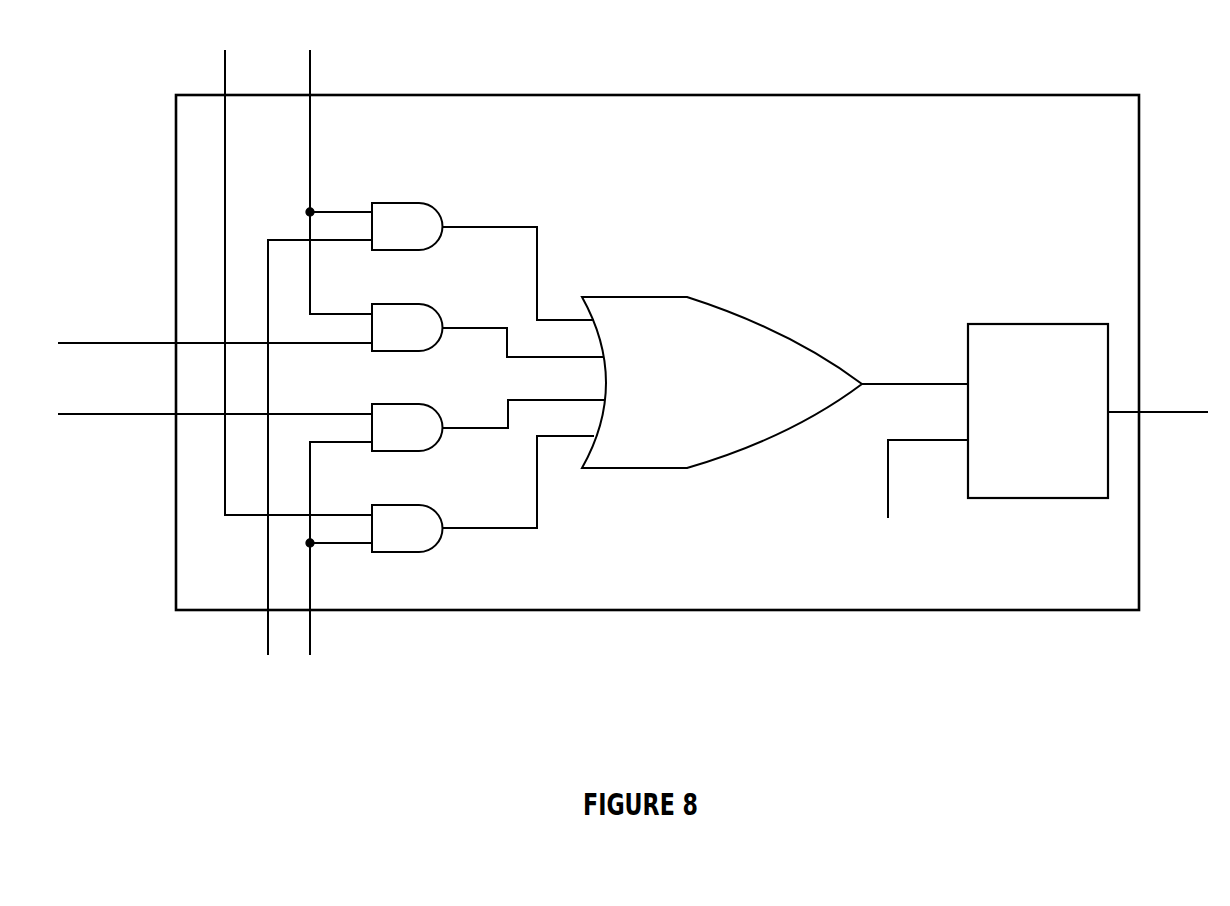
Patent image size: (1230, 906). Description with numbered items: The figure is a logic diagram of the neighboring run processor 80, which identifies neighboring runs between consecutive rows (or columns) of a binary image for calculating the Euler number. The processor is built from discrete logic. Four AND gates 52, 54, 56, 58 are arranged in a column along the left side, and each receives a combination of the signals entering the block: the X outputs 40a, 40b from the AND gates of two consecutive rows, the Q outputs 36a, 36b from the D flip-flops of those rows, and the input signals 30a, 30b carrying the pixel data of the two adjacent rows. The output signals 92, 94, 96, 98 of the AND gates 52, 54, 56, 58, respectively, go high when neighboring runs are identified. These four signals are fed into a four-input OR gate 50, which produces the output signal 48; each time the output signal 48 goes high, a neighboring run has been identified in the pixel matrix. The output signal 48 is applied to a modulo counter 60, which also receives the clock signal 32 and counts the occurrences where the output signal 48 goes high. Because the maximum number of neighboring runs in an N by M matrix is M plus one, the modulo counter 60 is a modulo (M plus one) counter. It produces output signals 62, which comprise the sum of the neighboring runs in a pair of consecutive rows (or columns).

The neighboring run processor 80 is at (894, 264).
The Q output 36a is at (228, 75).
The Q output 36b is at (268, 628).
The X output 40a is at (312, 75).
The X output 40b is at (312, 628).
The input signal 30a is at (70, 414).
The input signal 30b is at (70, 343).
The AND gate 52 is at (400, 203).
The AND gate 54 is at (400, 304).
The AND gate 56 is at (400, 404).
The AND gate 58 is at (400, 505).
The output signal 92 is at (450, 227).
The output signal 94 is at (450, 328).
The output signal 96 is at (450, 428).
The output signal 98 is at (450, 528).
The four-input OR gate 50 is at (663, 297).
The output signal 48 is at (902, 384).
The clock signal 32 is at (900, 440).
The modulo counter 60 is at (1082, 324).
The output signals 62 is at (1155, 412).